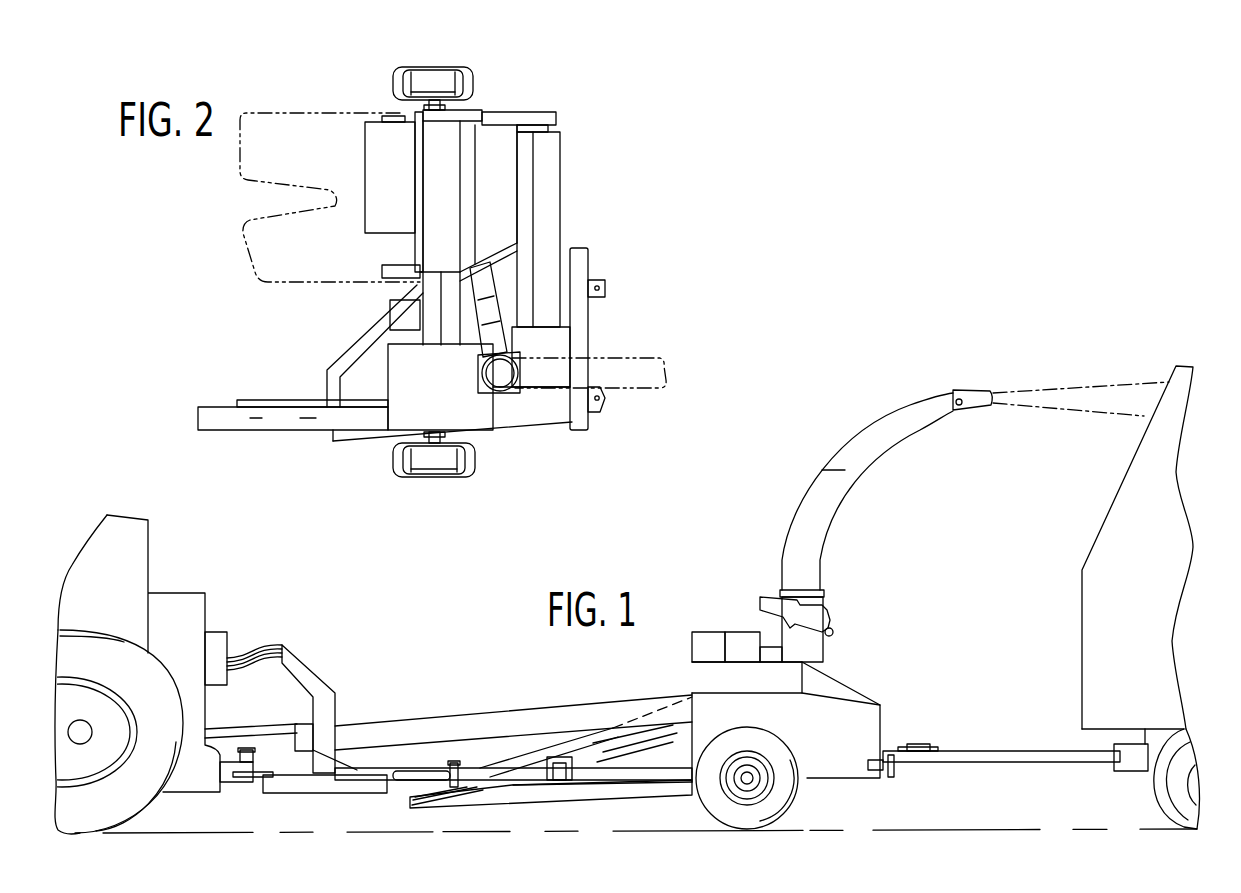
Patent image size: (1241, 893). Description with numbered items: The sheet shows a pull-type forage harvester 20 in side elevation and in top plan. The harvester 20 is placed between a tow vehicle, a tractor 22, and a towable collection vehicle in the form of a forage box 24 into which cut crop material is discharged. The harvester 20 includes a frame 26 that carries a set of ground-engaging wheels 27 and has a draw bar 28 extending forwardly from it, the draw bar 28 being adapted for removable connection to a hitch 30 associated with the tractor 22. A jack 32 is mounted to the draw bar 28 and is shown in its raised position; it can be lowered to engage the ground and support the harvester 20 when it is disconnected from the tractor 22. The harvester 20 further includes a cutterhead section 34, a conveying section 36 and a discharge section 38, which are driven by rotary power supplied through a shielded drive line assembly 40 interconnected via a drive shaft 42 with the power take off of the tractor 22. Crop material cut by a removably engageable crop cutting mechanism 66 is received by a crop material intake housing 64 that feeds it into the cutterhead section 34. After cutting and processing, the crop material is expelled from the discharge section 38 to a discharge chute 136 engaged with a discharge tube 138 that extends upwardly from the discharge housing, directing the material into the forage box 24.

In FIG. 1, the pull-type forage harvester 20 is at (713, 556).
In FIG. 1, the tractor 22 is at (190, 548).
In FIG. 1, the forage box 24 is at (1057, 585).
In FIG. 2, the frame 26 is at (545, 105).
In FIG. 2, the ground-engaging wheels 27 is at (433, 67).
In FIG. 1, the ground-engaging wheels 27 is at (795, 797).
In FIG. 1, the draw bar 28 is at (513, 787).
In FIG. 1, the hitch 30 is at (247, 800).
In FIG. 1, the jack 32 is at (405, 790).
In FIG. 2, the cutterhead section 34 is at (478, 104).
In FIG. 2, the conveying section 36 is at (567, 175).
In FIG. 2, the discharge section 38 is at (493, 262).
In FIG. 1, the shielded drive line assembly 40 is at (513, 703).
In FIG. 1, the drive shaft 42 is at (243, 727).
In FIG. 2, the crop material intake housing 64 is at (375, 125).
In FIG. 2, the crop cutting mechanism 66 is at (233, 243).
In FIG. 1, the crop cutting mechanism 66 is at (483, 812).
In FIG. 1, the discharge chute 136 is at (841, 478).
In FIG. 1, the discharge tube 138 is at (828, 600).